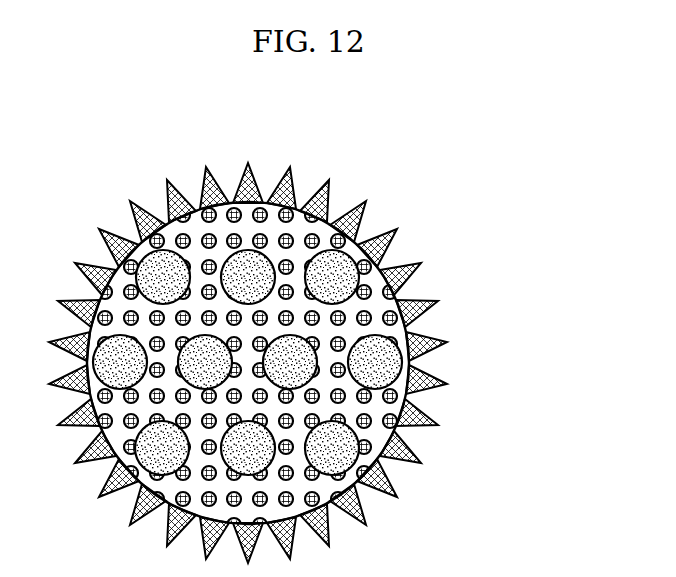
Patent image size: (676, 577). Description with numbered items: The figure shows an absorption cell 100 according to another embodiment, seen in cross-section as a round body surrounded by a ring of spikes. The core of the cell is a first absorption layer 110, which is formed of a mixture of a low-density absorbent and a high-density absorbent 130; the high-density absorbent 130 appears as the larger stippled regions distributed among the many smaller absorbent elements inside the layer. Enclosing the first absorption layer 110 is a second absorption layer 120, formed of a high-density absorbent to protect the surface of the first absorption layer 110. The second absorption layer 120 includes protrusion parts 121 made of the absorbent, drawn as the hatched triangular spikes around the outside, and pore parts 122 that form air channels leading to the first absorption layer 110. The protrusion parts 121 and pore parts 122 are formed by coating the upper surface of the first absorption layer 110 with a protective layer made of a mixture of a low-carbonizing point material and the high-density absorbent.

The absorption cell 100 is at (238, 111).
The first absorption layer 110 is at (393, 432).
The second absorption layer 120 is at (527, 287).
The protrusion parts 121 is at (415, 357).
The pore parts 122 is at (413, 325).
The high-density absorbent 130 is at (339, 268).